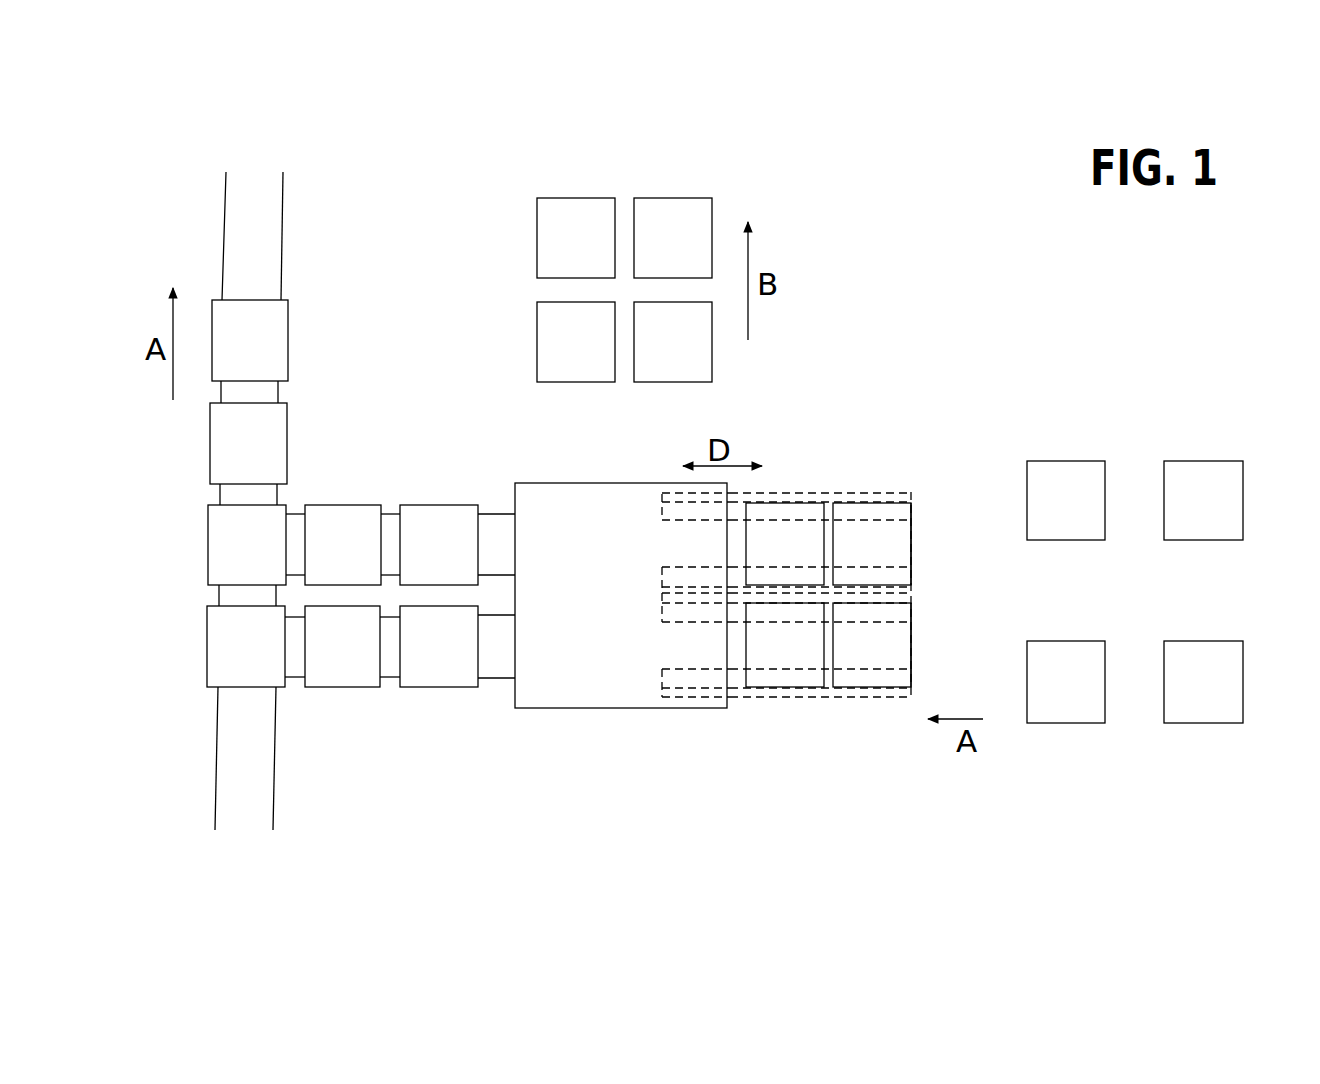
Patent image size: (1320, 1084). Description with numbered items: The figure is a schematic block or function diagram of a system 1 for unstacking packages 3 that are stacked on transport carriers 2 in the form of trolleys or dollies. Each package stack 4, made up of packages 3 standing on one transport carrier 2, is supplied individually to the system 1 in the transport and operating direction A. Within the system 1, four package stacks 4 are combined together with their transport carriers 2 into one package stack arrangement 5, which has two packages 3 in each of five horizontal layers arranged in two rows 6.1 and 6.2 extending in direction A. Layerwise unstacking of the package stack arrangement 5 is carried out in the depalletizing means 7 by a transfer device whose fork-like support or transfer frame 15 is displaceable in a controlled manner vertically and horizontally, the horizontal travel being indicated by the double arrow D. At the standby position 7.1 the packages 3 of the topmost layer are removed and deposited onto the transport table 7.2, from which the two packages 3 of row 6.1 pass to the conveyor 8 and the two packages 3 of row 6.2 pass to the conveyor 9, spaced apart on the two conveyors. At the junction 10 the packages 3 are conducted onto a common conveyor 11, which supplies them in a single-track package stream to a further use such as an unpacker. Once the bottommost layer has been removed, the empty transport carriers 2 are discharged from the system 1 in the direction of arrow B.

The system 1 is at (816, 226).
The transport carrier 2 is at (566, 223).
The package 3 is at (275, 337).
The package stack 4 is at (803, 528).
The package stack arrangement 5 is at (888, 489).
The row 6.1 is at (915, 517).
The row 6.2 is at (915, 643).
The depalletizing means 7 is at (713, 658).
The standby position 7.1 is at (828, 712).
The transport table 7.2 is at (621, 710).
The conveyor 8 is at (491, 540).
The conveyor 9 is at (490, 652).
The junction 10 is at (302, 488).
The conveyor 11 is at (260, 263).
The support or transfer frame 15 is at (773, 486).